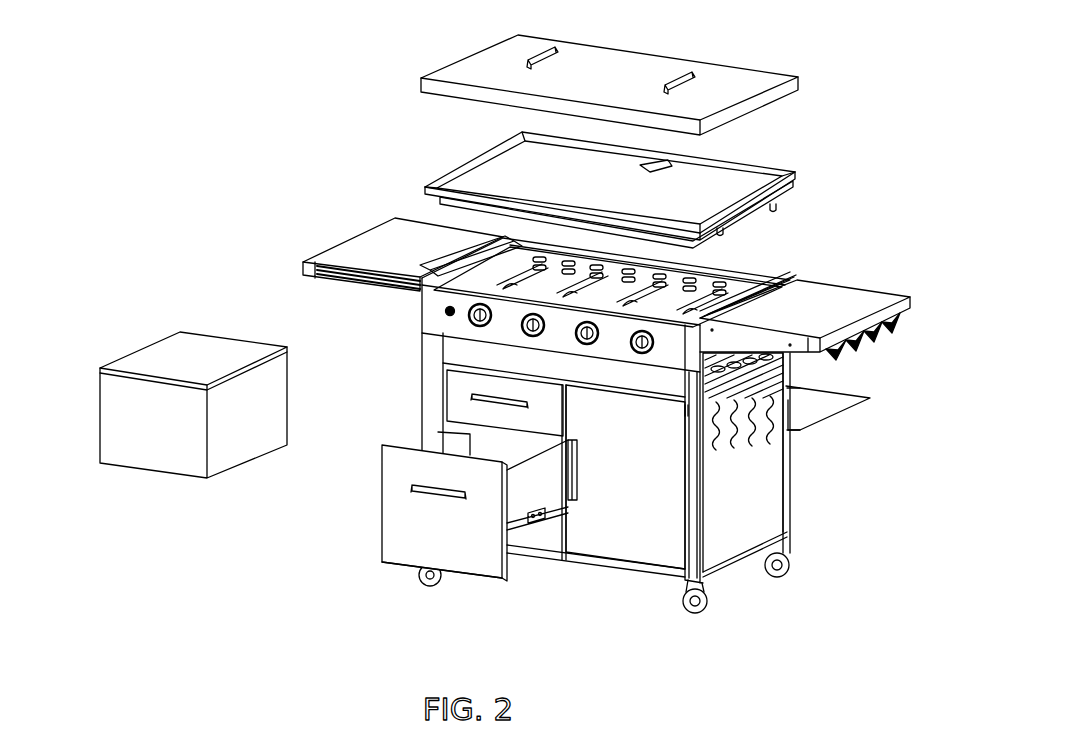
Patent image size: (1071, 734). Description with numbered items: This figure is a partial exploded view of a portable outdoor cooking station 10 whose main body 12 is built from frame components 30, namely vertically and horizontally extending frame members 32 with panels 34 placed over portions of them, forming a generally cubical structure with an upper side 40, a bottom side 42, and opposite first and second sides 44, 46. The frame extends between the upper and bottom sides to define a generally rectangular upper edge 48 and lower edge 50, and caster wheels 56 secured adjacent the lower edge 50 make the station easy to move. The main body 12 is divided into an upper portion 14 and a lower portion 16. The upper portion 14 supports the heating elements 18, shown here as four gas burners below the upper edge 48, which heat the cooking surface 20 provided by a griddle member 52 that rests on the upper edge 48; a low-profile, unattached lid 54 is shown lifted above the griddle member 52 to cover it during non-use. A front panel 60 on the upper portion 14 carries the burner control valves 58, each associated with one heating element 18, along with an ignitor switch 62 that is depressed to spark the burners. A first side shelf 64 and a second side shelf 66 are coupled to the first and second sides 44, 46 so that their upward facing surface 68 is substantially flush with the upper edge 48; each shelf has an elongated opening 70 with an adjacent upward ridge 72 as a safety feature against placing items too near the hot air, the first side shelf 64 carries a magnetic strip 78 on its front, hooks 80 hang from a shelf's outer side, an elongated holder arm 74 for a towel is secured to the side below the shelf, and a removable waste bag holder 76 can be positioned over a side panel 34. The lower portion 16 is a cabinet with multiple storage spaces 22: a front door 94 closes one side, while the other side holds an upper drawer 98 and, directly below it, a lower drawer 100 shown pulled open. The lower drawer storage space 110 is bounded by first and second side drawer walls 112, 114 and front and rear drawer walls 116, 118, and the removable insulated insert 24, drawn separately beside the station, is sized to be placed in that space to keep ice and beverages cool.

The cooking station 10 is at (884, 134).
The main body 12 is at (612, 469).
The upper portion 14 is at (580, 318).
The lower portion 16 is at (612, 469).
The heating elements 18 is at (660, 296).
The cooking surface 20 is at (712, 190).
The storage spaces 22 is at (467, 527).
The removable insulated insert 24 is at (92, 435).
The frame components 30 is at (718, 496).
The frame members 32 is at (704, 522).
The panels 34 is at (775, 462).
The upper side 40 is at (630, 268).
The bottom side 42 is at (586, 585).
The first side 44 is at (413, 410).
The second side 46 is at (808, 441).
The upper edge 48 is at (380, 265).
The lower edge 50 is at (656, 575).
The griddle member 52 is at (587, 180).
The lid 54 is at (748, 73).
The wheels 56 is at (705, 607).
The burner control valves 58 is at (644, 355).
The front panel 60 is at (589, 348).
The ignitor switch 62 is at (446, 312).
The first side shelf 64 is at (402, 213).
The second side shelf 66 is at (827, 280).
The upward facing surface 68 is at (835, 295).
The elongated opening 70 is at (750, 305).
The ridge 72 is at (797, 293).
The elongated holder arm 74 is at (688, 412).
The removable waste bag holder 76 is at (852, 392).
The magnetic strip 78 is at (325, 282).
The hooks 80 is at (897, 320).
The front door 94 is at (630, 542).
The upper drawer 98 is at (546, 410).
The lower drawer 100 is at (433, 532).
The lower drawer storage space 110 is at (420, 548).
The first side drawer wall 112 is at (437, 440).
The second side drawer wall 114 is at (508, 548).
The front drawer wall 116 is at (413, 541).
The rear drawer wall 118 is at (571, 470).